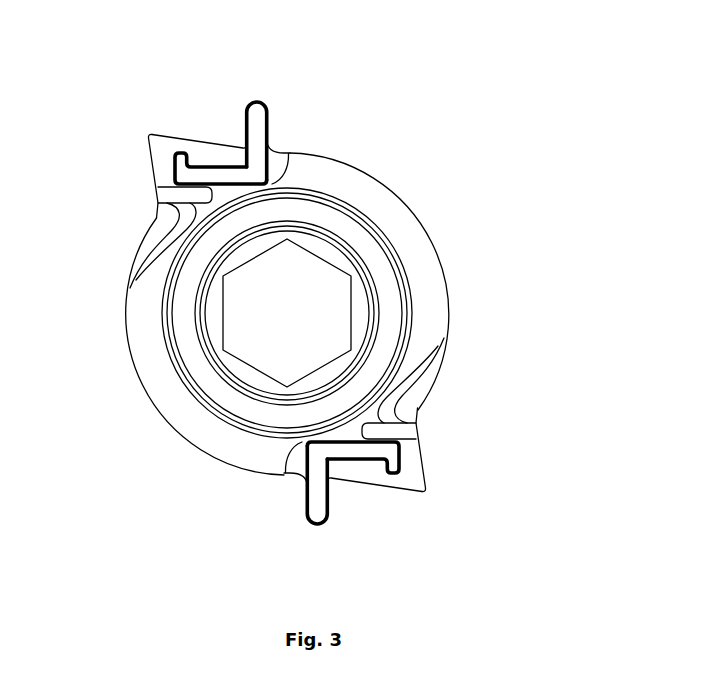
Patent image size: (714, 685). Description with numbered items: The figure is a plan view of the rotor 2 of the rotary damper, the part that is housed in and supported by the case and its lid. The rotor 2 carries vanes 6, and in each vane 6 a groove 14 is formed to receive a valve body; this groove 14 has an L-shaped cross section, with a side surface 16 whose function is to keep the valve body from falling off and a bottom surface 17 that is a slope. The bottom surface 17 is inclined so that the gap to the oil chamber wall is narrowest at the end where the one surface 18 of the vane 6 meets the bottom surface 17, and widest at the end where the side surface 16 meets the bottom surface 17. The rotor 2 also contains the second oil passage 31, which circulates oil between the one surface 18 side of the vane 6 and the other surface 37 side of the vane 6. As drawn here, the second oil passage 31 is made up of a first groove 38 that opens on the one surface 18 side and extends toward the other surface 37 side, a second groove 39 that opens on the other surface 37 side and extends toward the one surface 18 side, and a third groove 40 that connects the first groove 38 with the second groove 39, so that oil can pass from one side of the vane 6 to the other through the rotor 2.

The rotor 2 is at (418, 220).
The vane 6 is at (285, 319).
The groove 14 is at (284, 313).
The side surface 16 is at (285, 314).
The bottom surface 17 is at (186, 141).
The one surface 18 is at (147, 137).
The second oil passage 31 is at (176, 221).
The other surface 37 is at (268, 122).
The first groove 38 is at (158, 217).
The second groove 39 is at (269, 175).
The third groove 40 is at (274, 184).